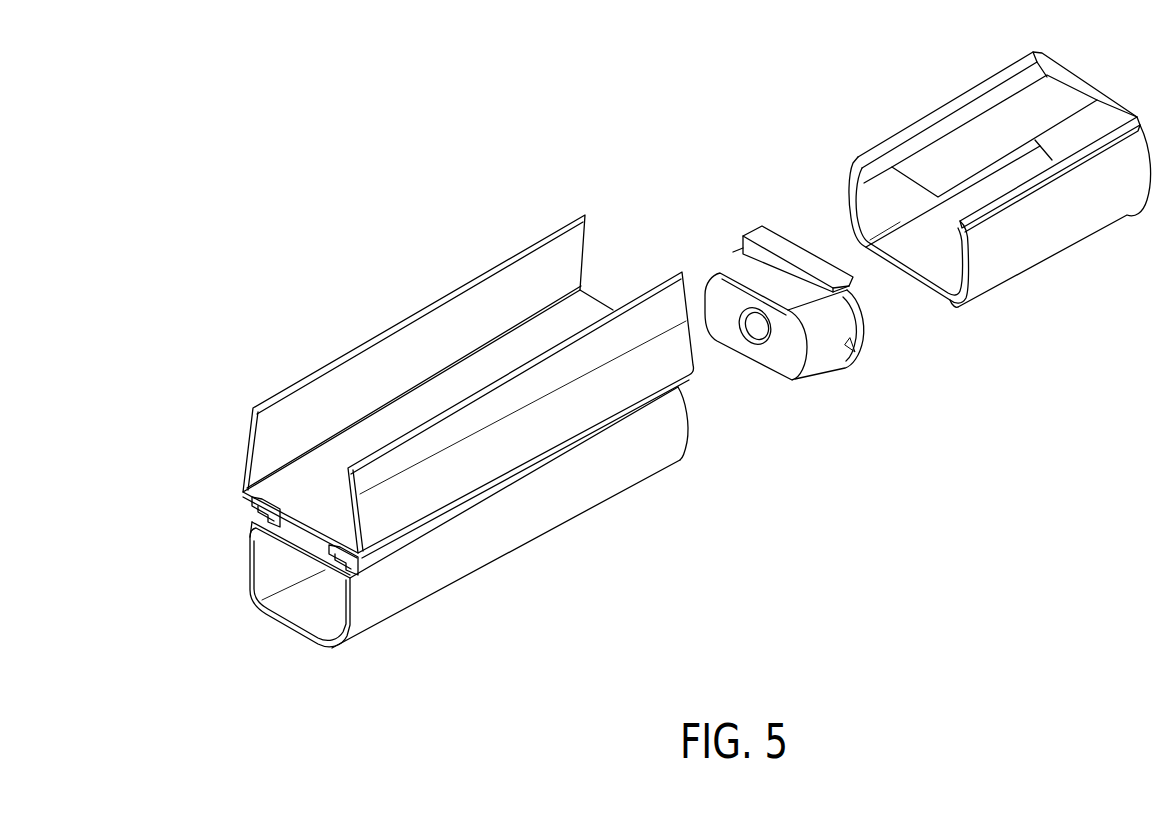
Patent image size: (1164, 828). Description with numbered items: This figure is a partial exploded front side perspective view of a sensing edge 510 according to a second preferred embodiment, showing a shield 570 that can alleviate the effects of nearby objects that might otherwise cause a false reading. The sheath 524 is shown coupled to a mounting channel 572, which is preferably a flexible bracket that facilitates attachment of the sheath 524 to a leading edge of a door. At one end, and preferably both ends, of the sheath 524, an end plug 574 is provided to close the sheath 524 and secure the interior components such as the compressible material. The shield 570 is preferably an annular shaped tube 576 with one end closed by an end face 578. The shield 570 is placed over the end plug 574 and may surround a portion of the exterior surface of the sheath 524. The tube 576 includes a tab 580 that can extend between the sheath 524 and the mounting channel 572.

The sensing edge 510 is at (283, 661).
The sheath 524 is at (524, 546).
The mounting channel 572 is at (500, 263).
The end plug 574 is at (818, 363).
The shield 570 is at (1052, 281).
The tube 576 is at (988, 255).
The end face 578 is at (1108, 118).
The tab 580 is at (975, 145).